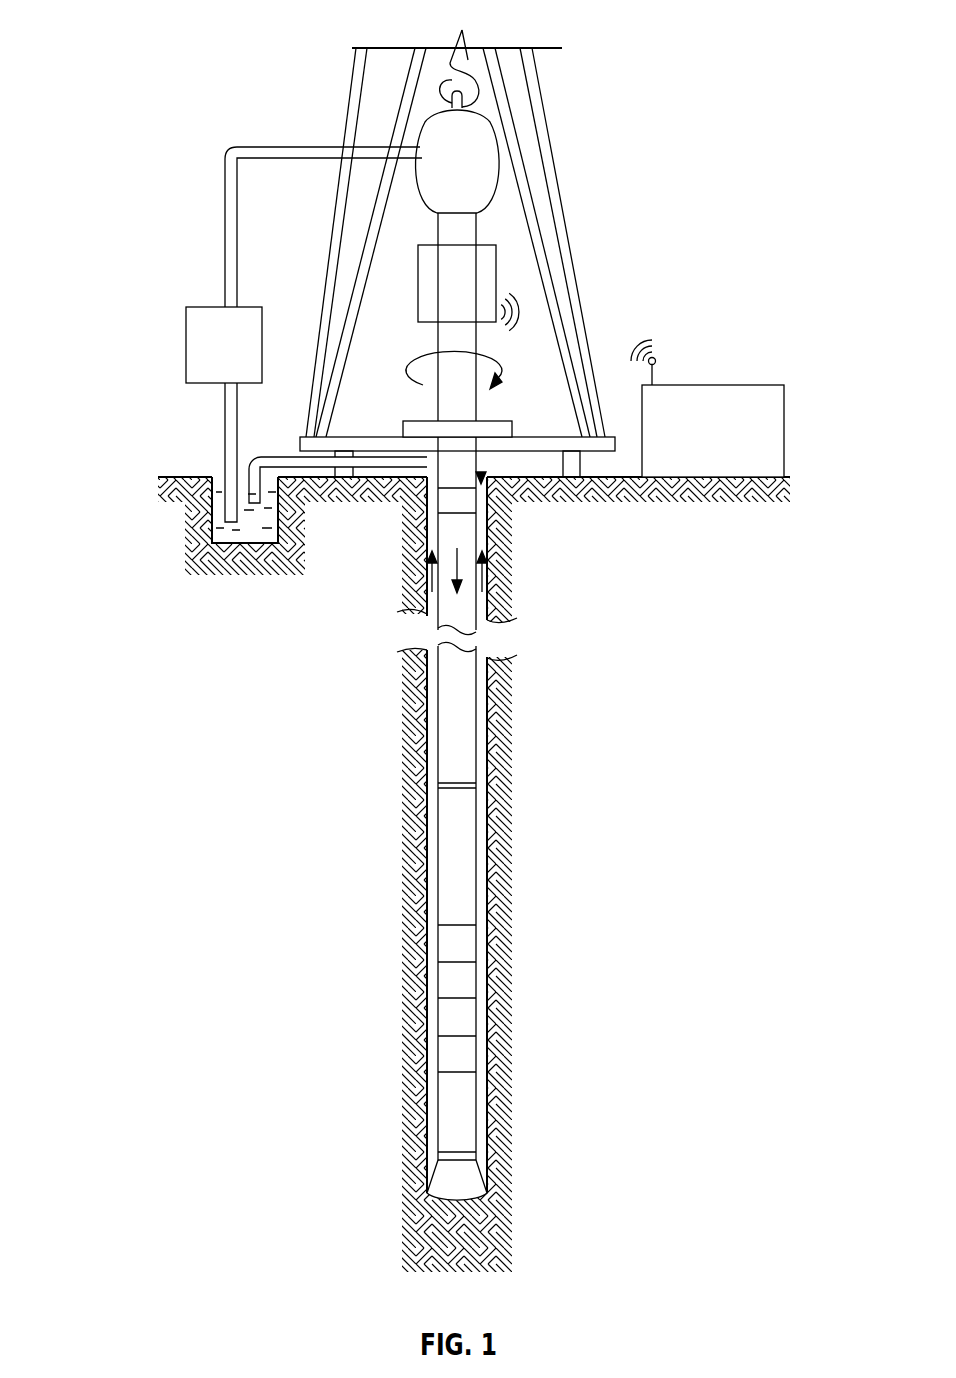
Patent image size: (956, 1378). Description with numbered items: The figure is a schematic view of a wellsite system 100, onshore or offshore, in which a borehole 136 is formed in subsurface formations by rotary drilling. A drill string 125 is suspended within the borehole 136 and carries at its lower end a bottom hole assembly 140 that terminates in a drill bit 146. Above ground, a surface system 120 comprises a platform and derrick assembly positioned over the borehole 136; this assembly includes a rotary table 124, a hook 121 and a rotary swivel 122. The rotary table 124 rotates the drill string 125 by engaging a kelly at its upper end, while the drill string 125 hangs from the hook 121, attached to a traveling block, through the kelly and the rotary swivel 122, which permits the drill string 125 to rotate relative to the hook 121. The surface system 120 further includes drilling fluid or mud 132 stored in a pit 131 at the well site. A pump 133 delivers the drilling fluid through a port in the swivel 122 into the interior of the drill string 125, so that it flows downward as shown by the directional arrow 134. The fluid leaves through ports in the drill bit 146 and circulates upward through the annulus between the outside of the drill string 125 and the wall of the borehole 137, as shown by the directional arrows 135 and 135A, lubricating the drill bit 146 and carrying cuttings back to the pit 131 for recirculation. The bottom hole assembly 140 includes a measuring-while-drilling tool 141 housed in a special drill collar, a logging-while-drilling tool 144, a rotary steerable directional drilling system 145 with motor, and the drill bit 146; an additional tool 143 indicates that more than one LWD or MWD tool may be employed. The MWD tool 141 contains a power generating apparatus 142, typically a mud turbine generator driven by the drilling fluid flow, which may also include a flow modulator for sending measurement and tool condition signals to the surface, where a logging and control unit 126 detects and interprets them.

The drilling system 100 is at (177, 29).
The surface system 120 is at (558, 115).
The hook 121 is at (473, 66).
The rotary swivel 122 is at (428, 140).
The rotary table 124 is at (412, 430).
The drill string 125 is at (457, 466).
The logging and control unit 126 is at (736, 385).
The pit 131 is at (248, 540).
The drilling fluid or mud 132 is at (216, 466).
The pump 133 is at (205, 306).
The directional arrow 134 is at (430, 582).
The directional arrow 135 is at (430, 578).
The directional arrow 135A is at (487, 578).
The borehole 136 is at (483, 476).
The wall of the borehole 137 is at (500, 795).
The bottom hole assembly 140 is at (382, 923).
The measuring-while-drilling tool 141 is at (467, 950).
The power generating apparatus 142 is at (467, 987).
The additional LWD and/or MWD tool 143 is at (467, 1023).
The logging-while-drilling tool 144 is at (467, 1058).
The rotary steerable directional drilling system 145 is at (467, 1118).
The drill bit 146 is at (467, 1182).